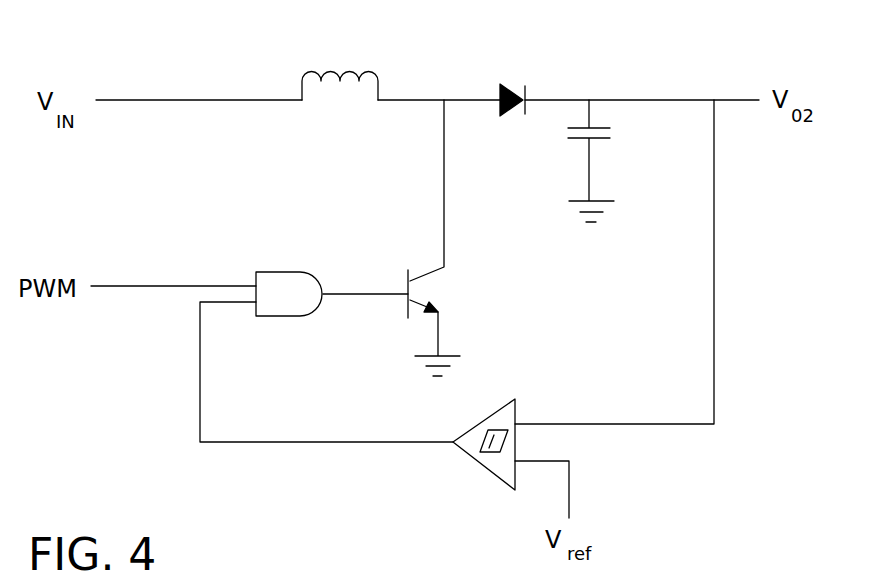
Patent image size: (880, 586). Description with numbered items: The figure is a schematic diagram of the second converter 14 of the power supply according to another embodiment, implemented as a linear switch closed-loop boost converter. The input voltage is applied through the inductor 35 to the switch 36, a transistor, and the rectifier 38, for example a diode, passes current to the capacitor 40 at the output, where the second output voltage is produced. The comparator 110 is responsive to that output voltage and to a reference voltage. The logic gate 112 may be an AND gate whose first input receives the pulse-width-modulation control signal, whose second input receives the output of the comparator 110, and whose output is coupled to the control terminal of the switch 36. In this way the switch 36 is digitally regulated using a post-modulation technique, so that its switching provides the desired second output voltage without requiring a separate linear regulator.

The second converter 14 is at (684, 55).
The inductor 35 is at (332, 72).
The rectifier 38 is at (516, 94).
The capacitor 40 is at (608, 131).
The switch 36 is at (432, 294).
The logic gate 112 is at (279, 272).
The comparator 110 is at (477, 463).